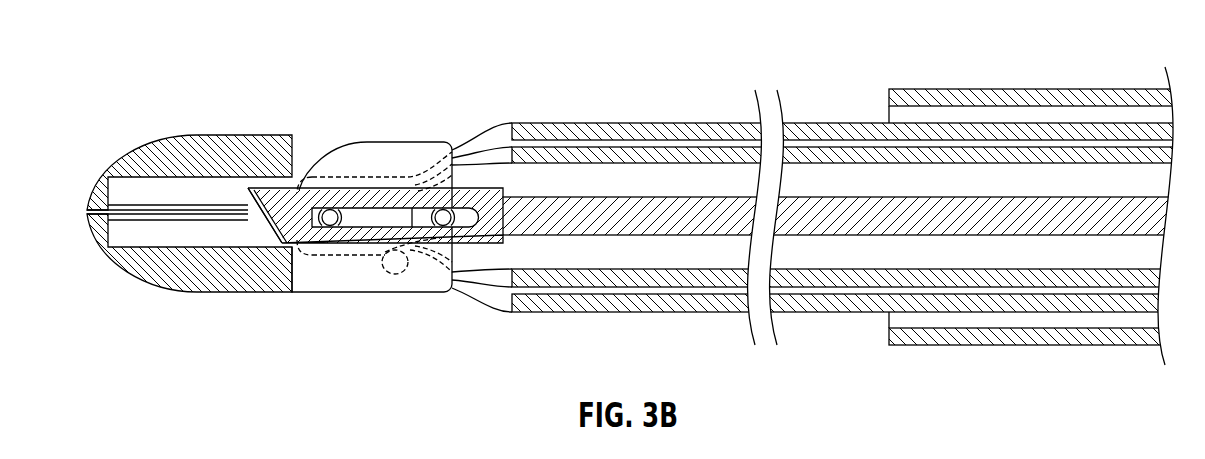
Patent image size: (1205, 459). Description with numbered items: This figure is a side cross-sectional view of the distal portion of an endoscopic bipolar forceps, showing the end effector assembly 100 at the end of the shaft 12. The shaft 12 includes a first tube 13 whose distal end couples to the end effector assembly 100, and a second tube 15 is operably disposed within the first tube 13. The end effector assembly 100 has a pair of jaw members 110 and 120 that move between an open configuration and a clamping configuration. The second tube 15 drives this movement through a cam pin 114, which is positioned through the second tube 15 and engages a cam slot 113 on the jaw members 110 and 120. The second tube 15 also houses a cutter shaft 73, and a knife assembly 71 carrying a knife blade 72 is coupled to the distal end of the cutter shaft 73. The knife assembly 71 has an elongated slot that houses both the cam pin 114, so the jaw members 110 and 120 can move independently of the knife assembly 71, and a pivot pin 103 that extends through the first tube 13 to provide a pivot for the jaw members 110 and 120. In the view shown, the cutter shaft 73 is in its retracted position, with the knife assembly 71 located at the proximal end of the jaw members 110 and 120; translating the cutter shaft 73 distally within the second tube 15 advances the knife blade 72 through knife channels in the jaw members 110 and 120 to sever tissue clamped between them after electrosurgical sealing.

The end effector assembly 100 is at (105, 35).
The jaw member 110 is at (162, 137).
The jaw member 120 is at (162, 290).
The knife blade 72 is at (250, 187).
The knife assembly 71 is at (281, 180).
The pivot pin 103 is at (331, 209).
The cam pin 114 is at (443, 209).
The cam slot 113 is at (386, 284).
The cutter shaft 73 is at (603, 207).
The second tube 15 is at (690, 158).
The first tube 13 is at (858, 128).
The shaft 12 is at (952, 95).